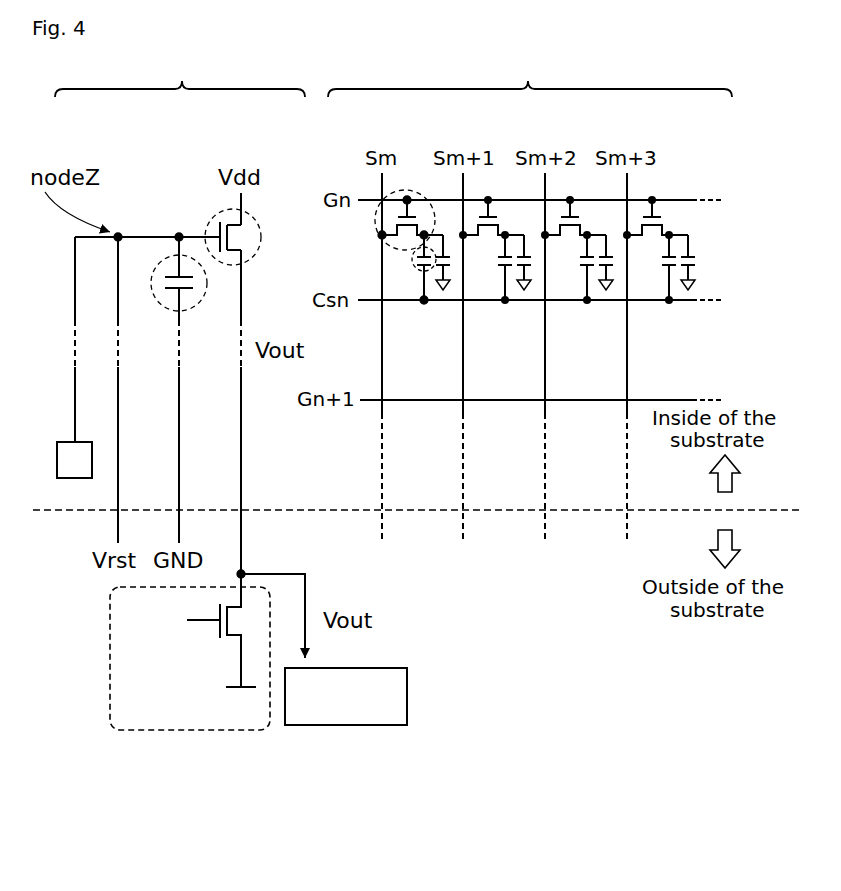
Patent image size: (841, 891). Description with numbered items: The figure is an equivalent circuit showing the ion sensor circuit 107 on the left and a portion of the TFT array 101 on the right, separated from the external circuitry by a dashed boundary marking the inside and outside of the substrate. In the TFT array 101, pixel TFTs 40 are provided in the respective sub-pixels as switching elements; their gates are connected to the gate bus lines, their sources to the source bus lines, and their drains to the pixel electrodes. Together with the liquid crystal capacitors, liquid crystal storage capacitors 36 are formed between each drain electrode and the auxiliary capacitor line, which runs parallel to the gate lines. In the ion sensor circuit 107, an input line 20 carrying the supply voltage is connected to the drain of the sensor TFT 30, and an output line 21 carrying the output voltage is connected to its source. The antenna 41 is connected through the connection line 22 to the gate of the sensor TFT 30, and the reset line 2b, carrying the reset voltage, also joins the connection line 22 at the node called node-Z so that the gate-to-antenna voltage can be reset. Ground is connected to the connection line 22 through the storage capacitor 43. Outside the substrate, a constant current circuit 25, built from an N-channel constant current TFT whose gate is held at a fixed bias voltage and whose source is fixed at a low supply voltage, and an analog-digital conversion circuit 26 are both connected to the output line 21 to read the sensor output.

The ion sensor circuit 107 is at (180, 76).
The TFT array 101 is at (530, 76).
The sensor TFT 30 is at (208, 212).
The storage capacitor 43 is at (168, 254).
The connection line 22 is at (159, 232).
The input line 20 is at (250, 199).
The output line 21 is at (250, 272).
The antenna 41 is at (61, 443).
The reset line 2b is at (122, 400).
The pixel TFT 40 is at (409, 187).
The liquid crystal storage capacitor 36 is at (412, 270).
The constant current circuit 25 is at (106, 673).
The analog-digital conversion circuit 26 is at (396, 665).